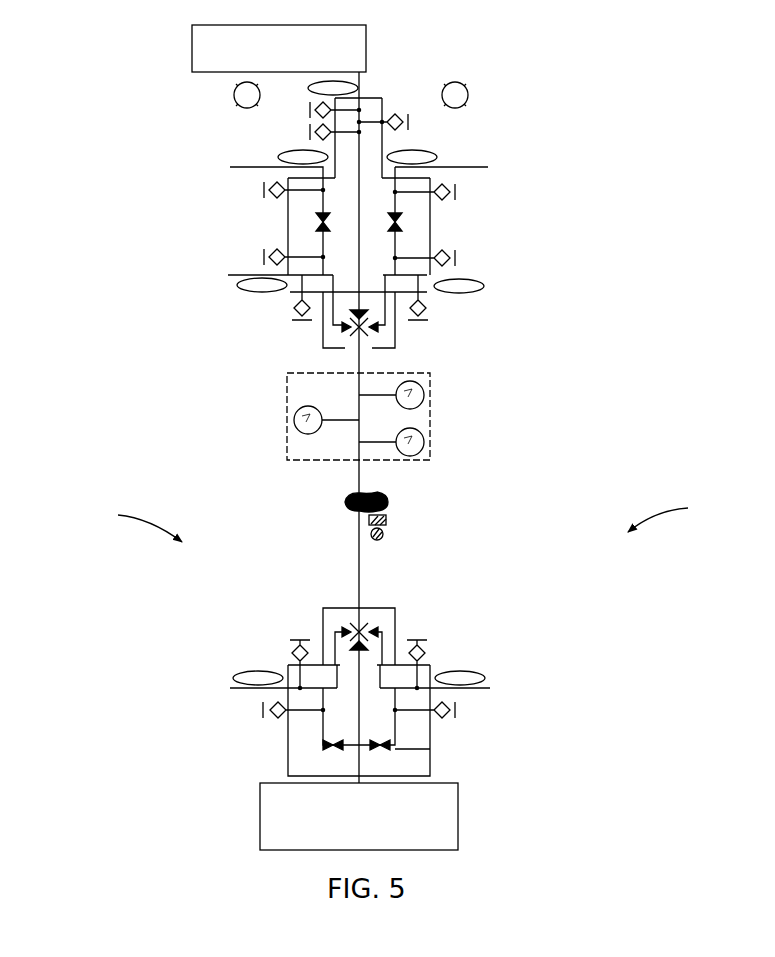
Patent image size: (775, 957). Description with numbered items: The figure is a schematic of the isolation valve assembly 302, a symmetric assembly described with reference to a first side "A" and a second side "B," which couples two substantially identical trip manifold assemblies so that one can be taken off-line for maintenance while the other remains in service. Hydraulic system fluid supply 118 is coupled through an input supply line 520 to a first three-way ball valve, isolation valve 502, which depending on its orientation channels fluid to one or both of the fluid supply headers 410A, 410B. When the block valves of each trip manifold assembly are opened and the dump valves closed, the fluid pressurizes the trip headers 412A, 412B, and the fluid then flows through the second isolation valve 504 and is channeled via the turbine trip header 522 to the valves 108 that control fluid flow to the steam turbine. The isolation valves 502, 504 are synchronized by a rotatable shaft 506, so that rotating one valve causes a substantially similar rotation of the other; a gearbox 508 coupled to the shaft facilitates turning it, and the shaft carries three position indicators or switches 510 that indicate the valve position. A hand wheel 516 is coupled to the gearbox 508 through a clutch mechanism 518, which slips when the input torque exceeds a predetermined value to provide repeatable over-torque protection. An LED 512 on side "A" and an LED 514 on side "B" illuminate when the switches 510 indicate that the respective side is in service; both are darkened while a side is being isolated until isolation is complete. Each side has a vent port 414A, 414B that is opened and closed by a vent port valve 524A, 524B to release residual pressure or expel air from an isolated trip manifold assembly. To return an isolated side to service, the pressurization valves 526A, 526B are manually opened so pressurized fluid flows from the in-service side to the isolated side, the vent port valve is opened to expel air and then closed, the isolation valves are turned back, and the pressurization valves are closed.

The valves 108 is at (279, 48).
The hydraulic system fluid supply 118 is at (359, 816).
The isolation valve assembly 302 is at (637, 85).
The fluid supply header 410A is at (243, 690).
The fluid supply header 410B is at (483, 690).
The trip header 412A is at (237, 278).
The trip header 412B is at (485, 277).
The vent port 414A is at (247, 167).
The vent port 414B is at (465, 167).
The isolation valve 502 is at (378, 626).
The isolation valve 504 is at (377, 332).
The rotatable shaft 506 is at (350, 553).
The gearbox 508 is at (350, 503).
The position indicators 510 is at (438, 418).
The LED 512 is at (233, 98).
The LED 514 is at (463, 82).
The hand wheel 516 is at (383, 535).
The clutch mechanism 518 is at (387, 520).
The input supply line 520 is at (360, 758).
The turbine trip header 522 is at (363, 82).
The vent port valve 524A is at (318, 228).
The vent port valve 524B is at (400, 228).
The pressurization valve 526A is at (322, 747).
The pressurization valve 526B is at (392, 748).